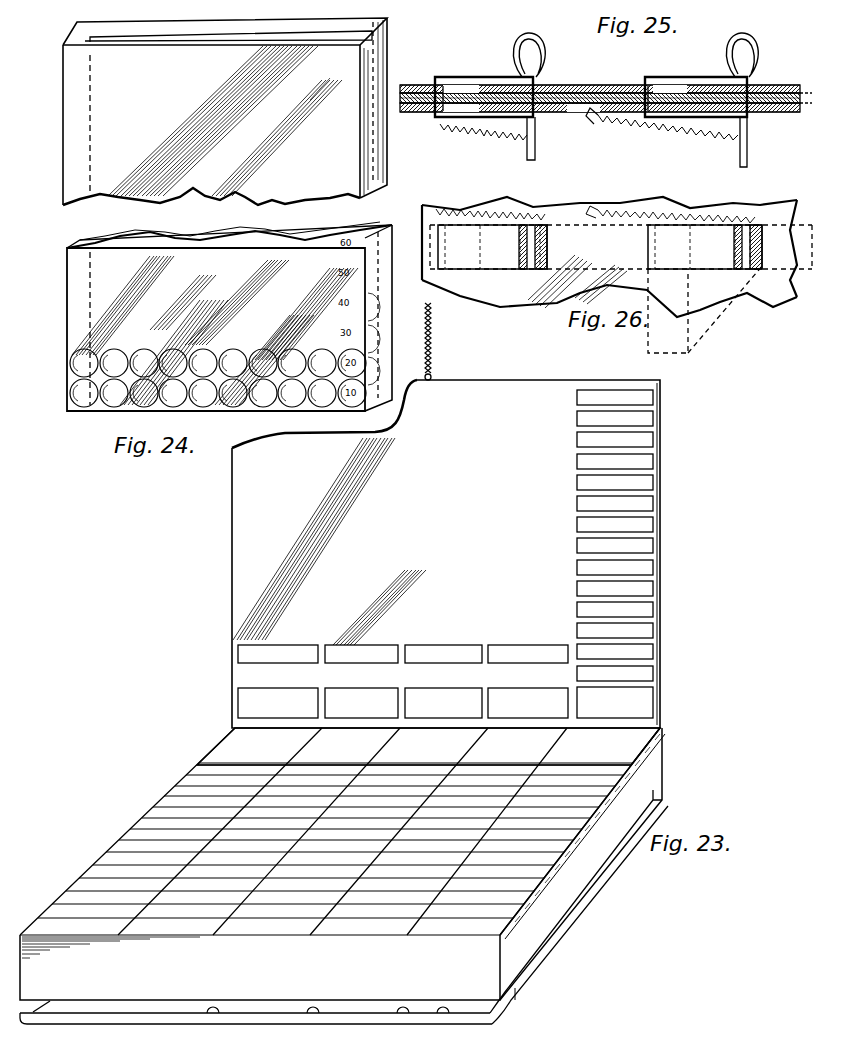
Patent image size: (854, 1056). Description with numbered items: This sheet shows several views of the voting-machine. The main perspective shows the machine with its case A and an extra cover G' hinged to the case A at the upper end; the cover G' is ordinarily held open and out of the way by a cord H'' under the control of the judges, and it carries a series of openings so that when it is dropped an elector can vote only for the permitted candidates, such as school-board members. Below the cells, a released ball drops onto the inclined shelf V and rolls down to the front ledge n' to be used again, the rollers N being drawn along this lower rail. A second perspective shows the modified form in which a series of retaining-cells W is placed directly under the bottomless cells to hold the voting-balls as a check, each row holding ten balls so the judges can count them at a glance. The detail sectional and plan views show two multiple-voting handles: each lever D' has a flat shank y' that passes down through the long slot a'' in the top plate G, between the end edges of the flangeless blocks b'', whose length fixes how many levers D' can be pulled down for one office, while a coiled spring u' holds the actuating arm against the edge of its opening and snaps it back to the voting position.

In FIG. 24, the retaining-cells W is at (225, 111).
In FIG. 25, the long slot a'' is at (434, 76).
In FIG. 25, the levers D' is at (596, 100).
In FIG. 26, the levers D' is at (599, 237).
In FIG. 25, the top plate G is at (606, 83).
In FIG. 26, the top plate G is at (617, 275).
In FIG. 25, the blocks b'' is at (600, 79).
In FIG. 25, the flat shank y' is at (657, 78).
In FIG. 25, the coiled spring u' is at (589, 136).
In FIG. 23, the cord H'' is at (450, 341).
In FIG. 23, the cover G' is at (446, 554).
In FIG. 23, the case A is at (342, 864).
In FIG. 23, the inclined shelf V is at (577, 922).
In FIG. 23, the rollers N is at (442, 1017).
In FIG. 23, the front ledge n' is at (258, 1025).